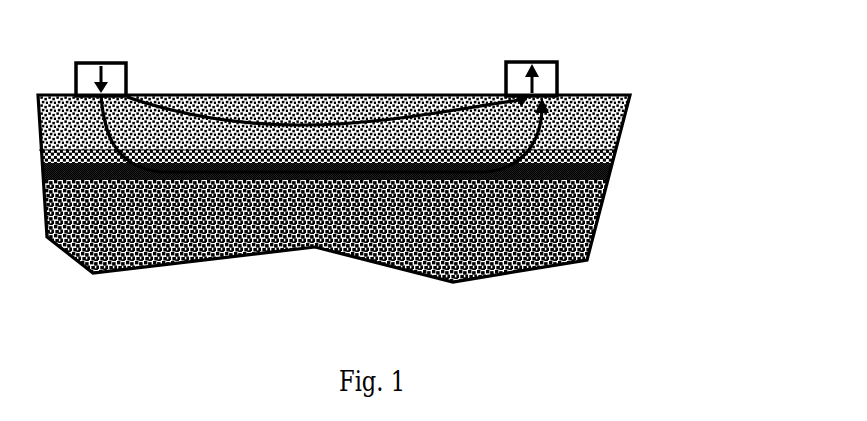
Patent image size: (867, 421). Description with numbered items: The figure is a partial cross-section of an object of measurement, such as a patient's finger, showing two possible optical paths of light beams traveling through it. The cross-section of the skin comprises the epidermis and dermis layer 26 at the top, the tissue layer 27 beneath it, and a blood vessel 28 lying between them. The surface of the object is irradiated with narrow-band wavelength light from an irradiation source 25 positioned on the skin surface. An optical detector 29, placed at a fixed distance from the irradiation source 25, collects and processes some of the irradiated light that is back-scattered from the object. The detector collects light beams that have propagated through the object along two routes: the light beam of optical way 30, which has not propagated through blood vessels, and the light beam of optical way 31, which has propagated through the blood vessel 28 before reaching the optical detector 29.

The irradiation source 25 is at (129, 69).
The epidermis and dermis layer 26 is at (205, 122).
The tissue layer 27 is at (238, 194).
The blood vessel 28 is at (321, 152).
The optical detector 29 is at (560, 73).
The optical way 30 is at (466, 110).
The optical way 31 is at (492, 174).